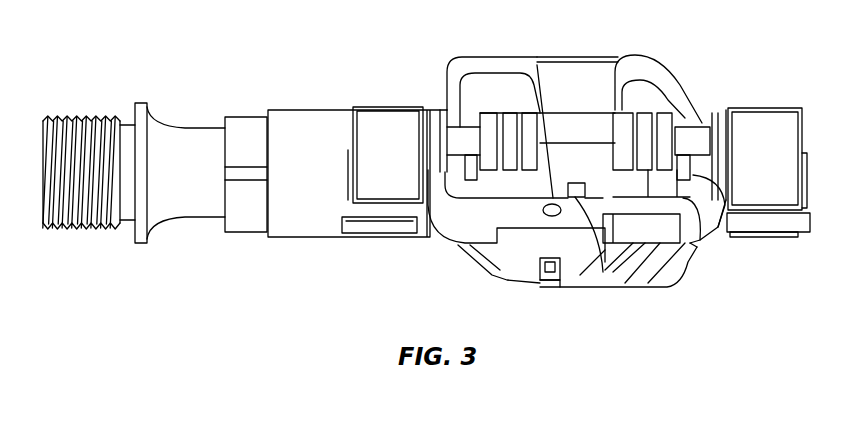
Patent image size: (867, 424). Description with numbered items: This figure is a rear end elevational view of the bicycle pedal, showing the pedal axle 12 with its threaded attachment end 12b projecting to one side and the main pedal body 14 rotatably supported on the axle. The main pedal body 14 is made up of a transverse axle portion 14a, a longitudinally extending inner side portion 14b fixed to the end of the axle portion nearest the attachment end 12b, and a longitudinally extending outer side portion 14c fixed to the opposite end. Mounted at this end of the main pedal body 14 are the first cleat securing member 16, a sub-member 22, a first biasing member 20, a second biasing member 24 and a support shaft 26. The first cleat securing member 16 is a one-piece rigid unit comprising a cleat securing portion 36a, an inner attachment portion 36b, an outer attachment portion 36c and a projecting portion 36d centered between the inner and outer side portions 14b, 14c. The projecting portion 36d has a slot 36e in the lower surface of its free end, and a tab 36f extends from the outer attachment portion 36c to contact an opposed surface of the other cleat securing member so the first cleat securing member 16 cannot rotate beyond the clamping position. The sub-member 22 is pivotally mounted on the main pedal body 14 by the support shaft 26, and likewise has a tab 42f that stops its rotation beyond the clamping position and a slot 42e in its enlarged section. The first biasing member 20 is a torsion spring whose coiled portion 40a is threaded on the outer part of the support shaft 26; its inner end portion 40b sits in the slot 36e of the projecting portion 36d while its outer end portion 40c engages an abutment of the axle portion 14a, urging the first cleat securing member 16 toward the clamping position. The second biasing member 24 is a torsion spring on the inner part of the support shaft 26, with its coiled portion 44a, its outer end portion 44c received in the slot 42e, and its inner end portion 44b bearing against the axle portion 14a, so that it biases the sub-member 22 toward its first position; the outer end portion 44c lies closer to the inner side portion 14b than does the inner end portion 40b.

The pedal axle 12 is at (155, 183).
The attachment end 12b is at (80, 228).
The main pedal body 14 is at (539, 203).
The transverse axle portion 14a is at (627, 183).
The longitudinally extending inner side portion 14b is at (390, 172).
The longitudinally extending outer side portion 14c is at (762, 187).
The first cleat securing member 16 is at (587, 54).
The first biasing member 20 is at (672, 96).
The sub-member 22 is at (457, 248).
The second biasing member 24 is at (487, 105).
The support shaft 26 is at (695, 143).
The cleat securing portion 36a is at (542, 57).
The inner attachment portion 36b is at (472, 100).
The outer attachment portion 36c is at (677, 103).
The projecting portion 36d is at (597, 88).
The slot 36e is at (593, 262).
The tab 36f is at (716, 230).
The tab 42f is at (693, 245).
The coiled portion 40a is at (645, 56).
The inner end portion 40b is at (497, 262).
The outer end portion 40c is at (668, 170).
The slot 42e is at (523, 285).
The coiled portion 44a is at (506, 180).
The inner end portion 44b is at (485, 185).
The outer end portion 44c is at (556, 280).